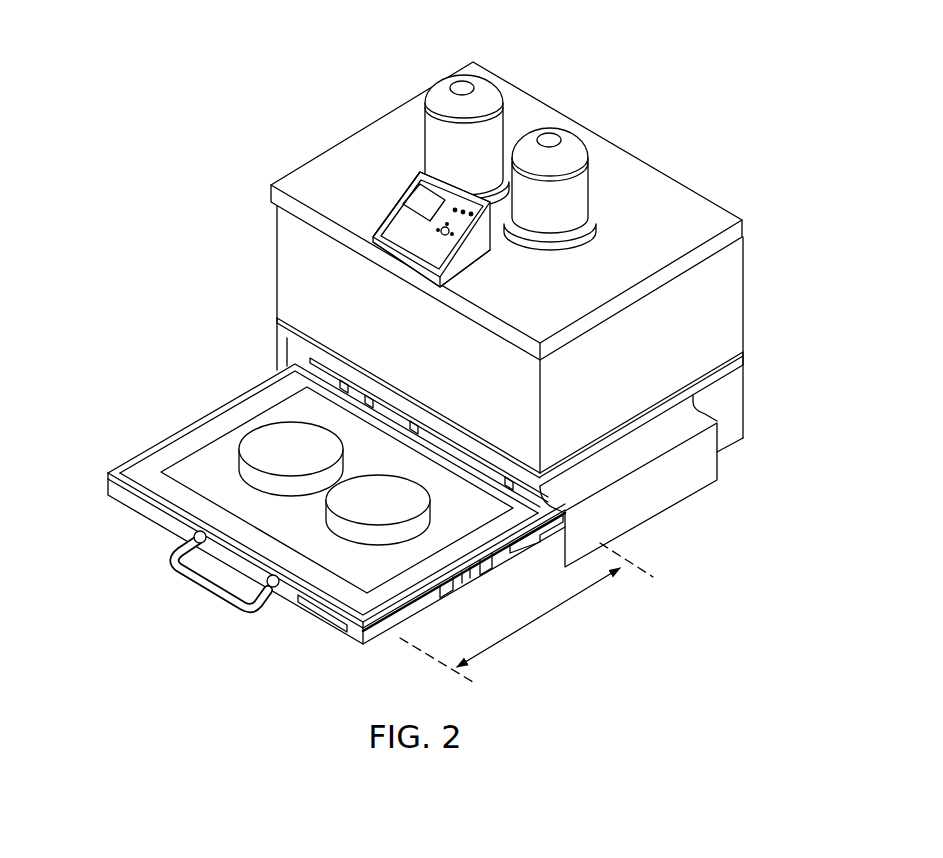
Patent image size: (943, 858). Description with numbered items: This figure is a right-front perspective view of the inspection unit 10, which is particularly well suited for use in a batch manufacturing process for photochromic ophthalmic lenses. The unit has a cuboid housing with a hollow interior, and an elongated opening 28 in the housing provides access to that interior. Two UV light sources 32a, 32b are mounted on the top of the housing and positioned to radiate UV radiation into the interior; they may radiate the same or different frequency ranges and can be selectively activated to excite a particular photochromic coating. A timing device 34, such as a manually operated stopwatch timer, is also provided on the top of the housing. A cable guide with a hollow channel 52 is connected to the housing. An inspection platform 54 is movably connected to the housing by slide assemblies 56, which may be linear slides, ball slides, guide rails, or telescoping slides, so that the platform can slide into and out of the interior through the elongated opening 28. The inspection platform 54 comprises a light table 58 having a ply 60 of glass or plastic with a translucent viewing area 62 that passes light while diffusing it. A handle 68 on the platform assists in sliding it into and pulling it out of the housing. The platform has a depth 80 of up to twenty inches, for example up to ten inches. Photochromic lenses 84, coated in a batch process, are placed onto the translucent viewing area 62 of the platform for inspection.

The inspection unit 10 is at (752, 178).
The elongated opening 28 is at (266, 355).
The UV light source 32a is at (462, 90).
The UV light source 32b is at (570, 152).
The timing device 34 is at (398, 226).
The channel 52 is at (558, 548).
The inspection platform 54 is at (320, 613).
The slide assembly 56 is at (548, 530).
The light table 58 is at (118, 438).
The ply 60 is at (192, 443).
The translucent viewing area 62 is at (203, 478).
The handle 68 is at (185, 564).
The depth 80 is at (548, 613).
The photochromic lens 84 is at (355, 505).